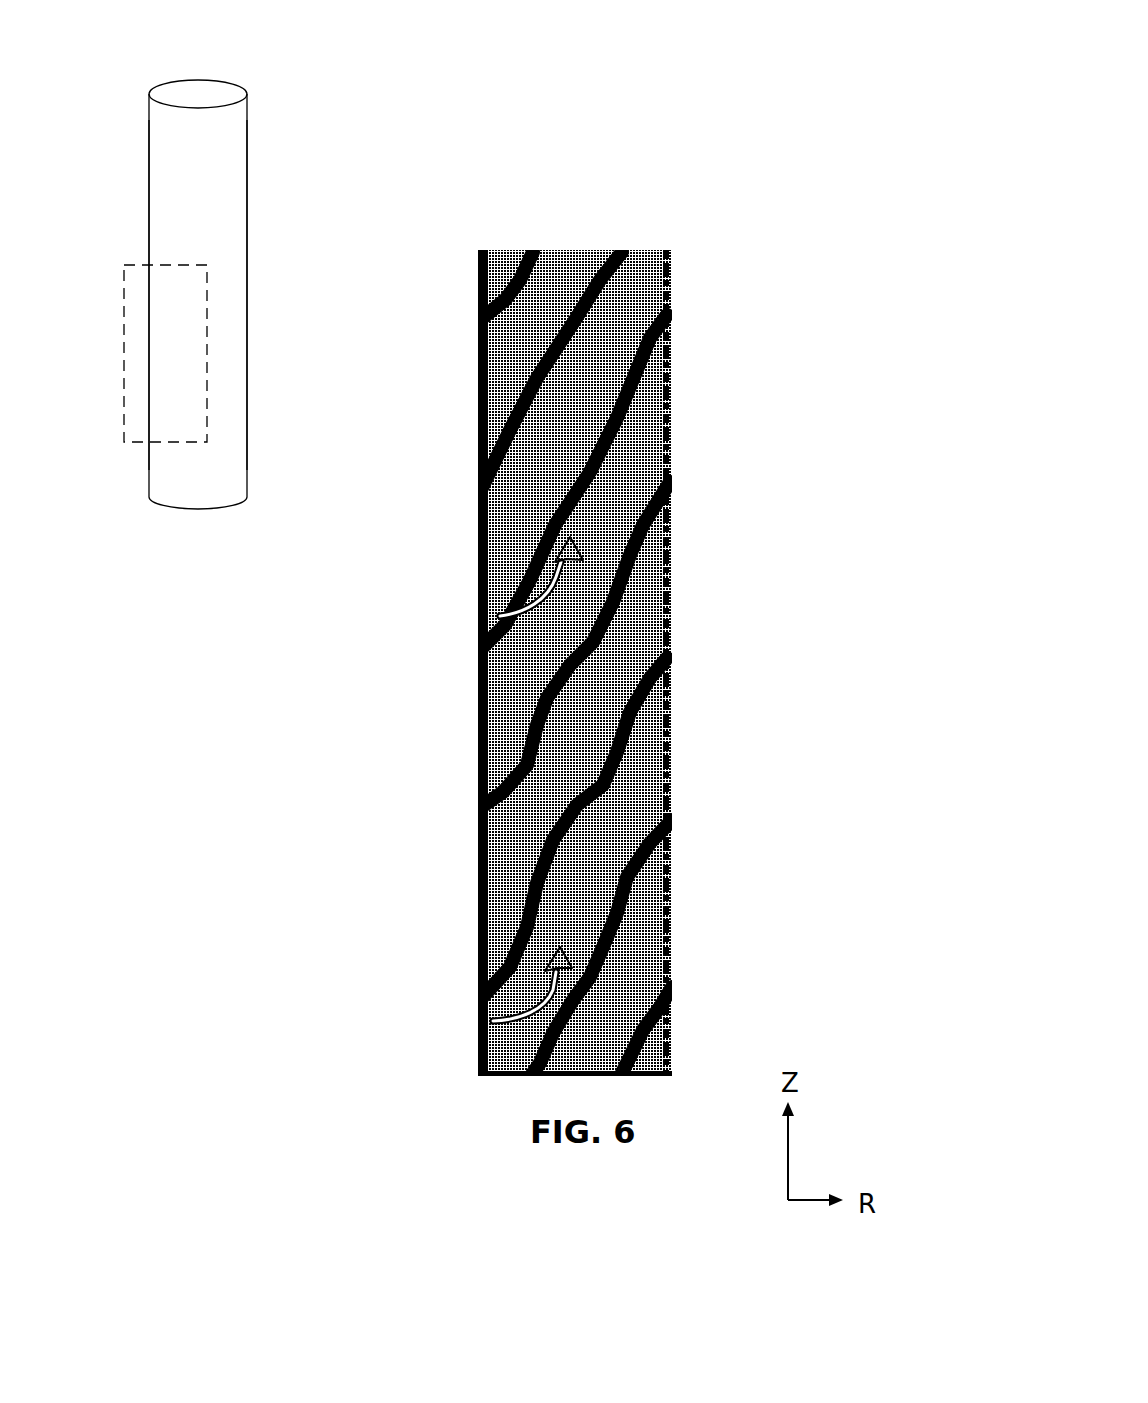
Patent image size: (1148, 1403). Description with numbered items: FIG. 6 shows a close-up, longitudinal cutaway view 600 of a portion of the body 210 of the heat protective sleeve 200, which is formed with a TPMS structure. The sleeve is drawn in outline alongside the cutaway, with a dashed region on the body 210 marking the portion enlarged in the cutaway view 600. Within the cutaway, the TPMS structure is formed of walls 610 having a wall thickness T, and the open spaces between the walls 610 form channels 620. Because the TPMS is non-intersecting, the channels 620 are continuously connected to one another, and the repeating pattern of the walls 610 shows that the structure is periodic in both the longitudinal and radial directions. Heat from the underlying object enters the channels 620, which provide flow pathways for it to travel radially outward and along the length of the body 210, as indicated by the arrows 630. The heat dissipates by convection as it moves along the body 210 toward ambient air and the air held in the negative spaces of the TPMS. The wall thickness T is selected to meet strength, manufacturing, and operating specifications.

The heat protective sleeve 200 is at (287, 104).
The body 210 is at (248, 222).
The longitudinal cutaway view 600 is at (207, 355).
The walls 610 is at (576, 664).
The channels 620 is at (627, 317).
The arrows 630 is at (500, 620).
The wall thickness T is at (565, 412).